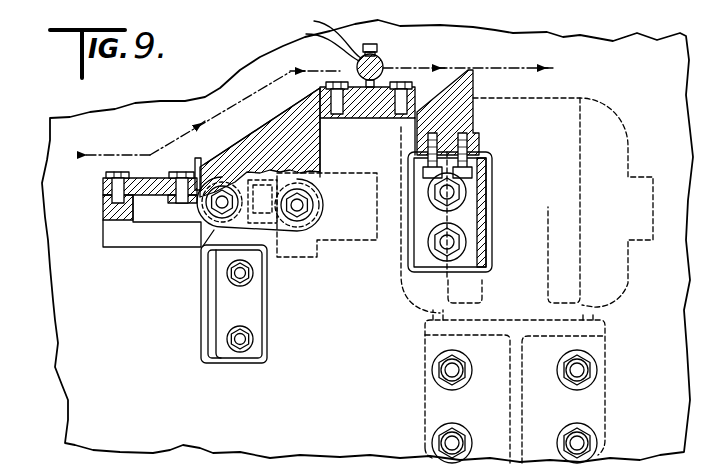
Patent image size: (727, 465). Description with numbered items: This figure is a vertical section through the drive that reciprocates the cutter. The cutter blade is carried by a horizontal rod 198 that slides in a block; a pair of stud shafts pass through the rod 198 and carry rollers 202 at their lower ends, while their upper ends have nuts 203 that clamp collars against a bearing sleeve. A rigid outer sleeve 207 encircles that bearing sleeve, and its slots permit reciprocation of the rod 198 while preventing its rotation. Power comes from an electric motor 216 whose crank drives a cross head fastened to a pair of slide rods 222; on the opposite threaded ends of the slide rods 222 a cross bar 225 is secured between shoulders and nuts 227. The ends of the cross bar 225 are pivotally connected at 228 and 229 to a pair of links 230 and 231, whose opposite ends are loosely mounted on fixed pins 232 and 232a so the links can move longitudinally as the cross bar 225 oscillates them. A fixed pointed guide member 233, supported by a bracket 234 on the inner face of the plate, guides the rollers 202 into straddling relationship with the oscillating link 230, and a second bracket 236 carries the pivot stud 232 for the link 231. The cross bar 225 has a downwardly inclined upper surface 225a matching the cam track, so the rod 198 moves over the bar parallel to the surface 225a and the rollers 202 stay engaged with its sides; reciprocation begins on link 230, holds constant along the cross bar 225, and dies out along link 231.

The horizontal rod 198 is at (319, 43).
The rollers 202 is at (374, 119).
The nuts 203 is at (375, 46).
The outer sleeve 207 is at (322, 33).
The electric motor 216 is at (606, 108).
The slide rods 222 is at (288, 214).
The cross bar 225 is at (252, 134).
The downwardly inclined upper surface 225a is at (224, 148).
The nuts 227 is at (205, 232).
The pivotal connection 228 is at (330, 83).
The pivotal connection 229 is at (196, 174).
The link 230 is at (368, 103).
The link 231 is at (145, 156).
The fixed pin 232 is at (104, 188).
The fixed pin 232a is at (399, 83).
The fixed pointed guide member 233 is at (457, 78).
The bracket 234 is at (484, 204).
The second bracket 236 is at (128, 236).